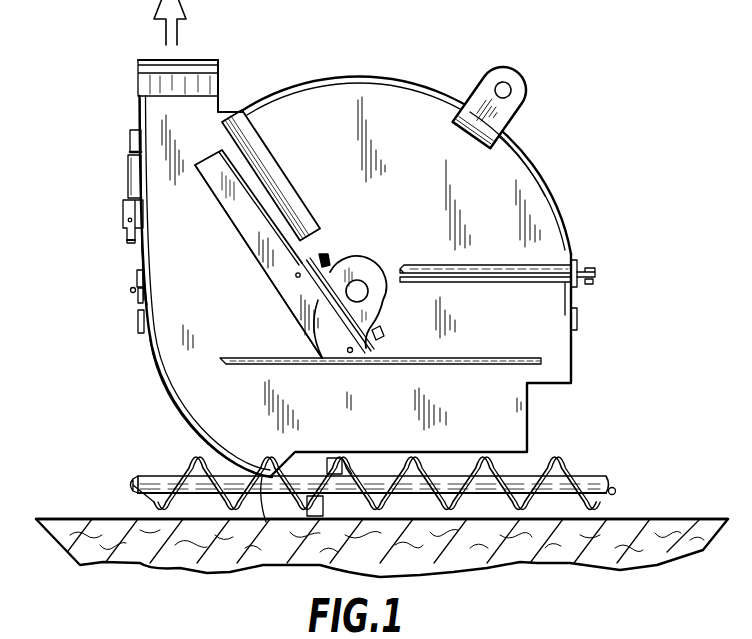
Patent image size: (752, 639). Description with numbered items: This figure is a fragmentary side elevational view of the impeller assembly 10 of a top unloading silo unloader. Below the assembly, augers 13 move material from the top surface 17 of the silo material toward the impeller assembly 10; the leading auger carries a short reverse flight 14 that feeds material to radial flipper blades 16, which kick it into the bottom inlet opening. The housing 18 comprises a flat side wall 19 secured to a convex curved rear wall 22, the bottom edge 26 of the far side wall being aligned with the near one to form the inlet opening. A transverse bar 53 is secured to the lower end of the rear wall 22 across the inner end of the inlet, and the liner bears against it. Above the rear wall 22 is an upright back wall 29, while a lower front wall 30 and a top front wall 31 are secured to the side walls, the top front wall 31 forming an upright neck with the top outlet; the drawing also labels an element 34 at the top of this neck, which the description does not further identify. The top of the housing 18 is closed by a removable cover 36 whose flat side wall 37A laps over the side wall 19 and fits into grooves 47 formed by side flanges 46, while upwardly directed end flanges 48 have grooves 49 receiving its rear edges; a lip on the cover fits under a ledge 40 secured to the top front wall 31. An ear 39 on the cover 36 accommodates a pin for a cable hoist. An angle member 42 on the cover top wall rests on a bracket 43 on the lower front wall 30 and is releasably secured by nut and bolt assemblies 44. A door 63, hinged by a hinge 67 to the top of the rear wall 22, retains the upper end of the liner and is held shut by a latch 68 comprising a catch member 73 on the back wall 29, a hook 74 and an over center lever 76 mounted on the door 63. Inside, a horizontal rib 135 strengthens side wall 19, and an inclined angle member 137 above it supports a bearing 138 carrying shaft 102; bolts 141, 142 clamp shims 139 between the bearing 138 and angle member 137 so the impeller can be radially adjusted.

The impeller assembly 10 is at (596, 107).
The augers 13 is at (556, 470).
The reverse flight 14 is at (194, 476).
The radial flipper blades 16 is at (323, 504).
The top surface 17 is at (650, 518).
The housing 18 is at (194, 345).
The side wall 19 is at (233, 391).
The rear wall 22 is at (174, 408).
The bottom edge 26 is at (428, 454).
The back wall 29 is at (140, 113).
The lower front wall 30 is at (574, 355).
The top front wall 31 is at (220, 62).
The outlet 34 is at (140, 62).
The cover 36 is at (410, 80).
The side wall 37A is at (506, 170).
The ear 39 is at (520, 104).
The ledge 40 is at (228, 110).
The angle member 42 is at (577, 258).
The bracket 43 is at (597, 270).
The nut and bolt assemblies 44 is at (594, 284).
The side flanges 46 is at (488, 283).
The grooves 47 is at (516, 265).
The end flanges 48 is at (276, 170).
The grooves 49 is at (262, 135).
The transverse bar 53 is at (264, 500).
The door 63 is at (140, 258).
The hinge 67 is at (136, 280).
The latch 68 is at (95, 186).
The catch member 73 is at (130, 143).
The hook 74 is at (128, 186).
The over center lever 76 is at (128, 243).
The shaft 102 is at (375, 300).
The rib 135 is at (442, 365).
The angle member 137 is at (246, 226).
The bearings 138 is at (357, 266).
The shims 139 is at (306, 260).
The bolt 141 is at (295, 278).
The bolt 142 is at (338, 354).